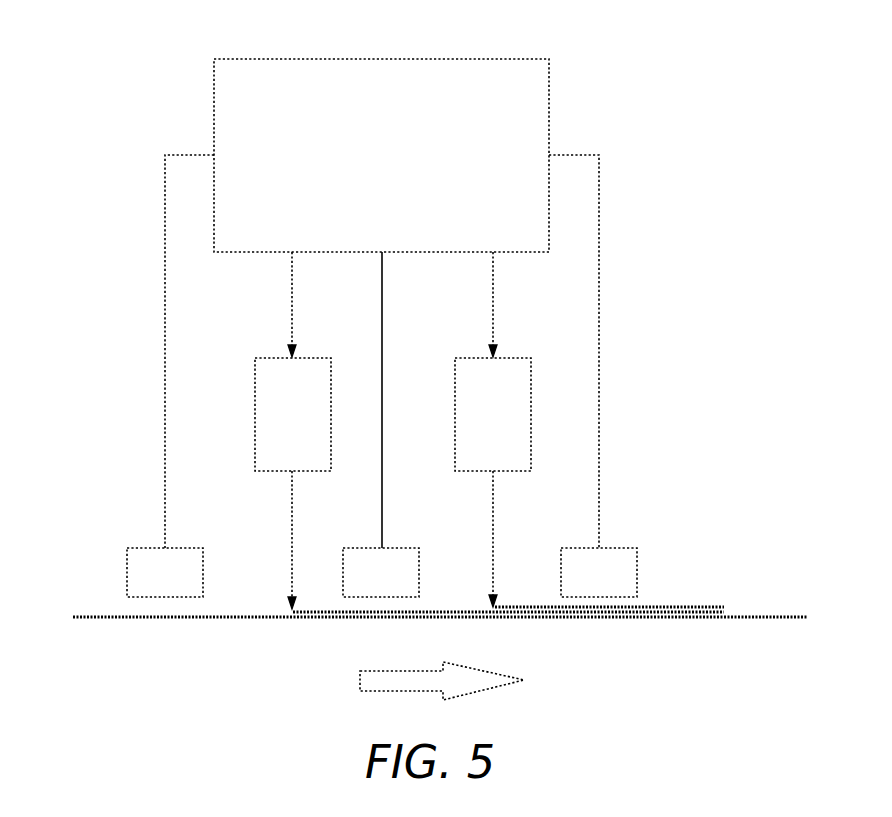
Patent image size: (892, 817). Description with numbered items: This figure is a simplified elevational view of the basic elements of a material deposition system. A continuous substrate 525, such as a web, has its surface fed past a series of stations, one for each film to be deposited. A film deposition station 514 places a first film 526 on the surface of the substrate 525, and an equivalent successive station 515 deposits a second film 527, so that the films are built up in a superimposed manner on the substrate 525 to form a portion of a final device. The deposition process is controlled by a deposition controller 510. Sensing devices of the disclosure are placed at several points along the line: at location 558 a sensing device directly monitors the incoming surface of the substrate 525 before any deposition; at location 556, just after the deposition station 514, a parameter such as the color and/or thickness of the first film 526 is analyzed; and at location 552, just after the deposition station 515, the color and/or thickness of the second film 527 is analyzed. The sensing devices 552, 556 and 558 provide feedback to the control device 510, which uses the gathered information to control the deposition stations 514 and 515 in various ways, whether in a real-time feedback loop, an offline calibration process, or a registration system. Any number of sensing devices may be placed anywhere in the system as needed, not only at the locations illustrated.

The deposition controller 510 is at (403, 58).
The film deposition station 514 is at (255, 406).
The film deposition station 515 is at (455, 415).
The sensing device location 556 is at (363, 548).
The sensing device location 558 is at (143, 548).
The sensing device location 552 is at (622, 548).
The continuous substrate 525 is at (213, 619).
The first film 526 is at (453, 610).
The second film 527 is at (703, 604).